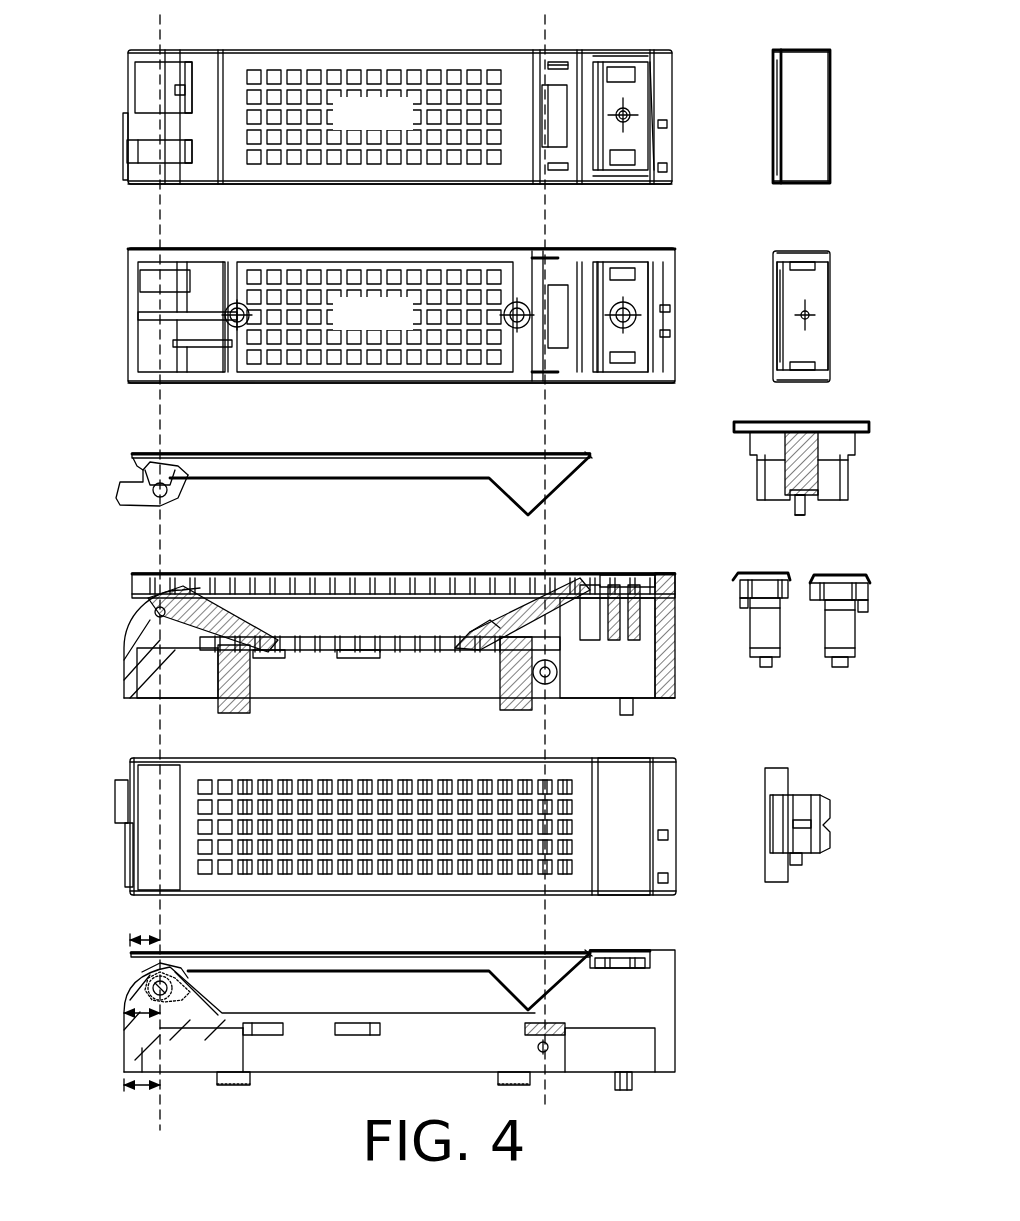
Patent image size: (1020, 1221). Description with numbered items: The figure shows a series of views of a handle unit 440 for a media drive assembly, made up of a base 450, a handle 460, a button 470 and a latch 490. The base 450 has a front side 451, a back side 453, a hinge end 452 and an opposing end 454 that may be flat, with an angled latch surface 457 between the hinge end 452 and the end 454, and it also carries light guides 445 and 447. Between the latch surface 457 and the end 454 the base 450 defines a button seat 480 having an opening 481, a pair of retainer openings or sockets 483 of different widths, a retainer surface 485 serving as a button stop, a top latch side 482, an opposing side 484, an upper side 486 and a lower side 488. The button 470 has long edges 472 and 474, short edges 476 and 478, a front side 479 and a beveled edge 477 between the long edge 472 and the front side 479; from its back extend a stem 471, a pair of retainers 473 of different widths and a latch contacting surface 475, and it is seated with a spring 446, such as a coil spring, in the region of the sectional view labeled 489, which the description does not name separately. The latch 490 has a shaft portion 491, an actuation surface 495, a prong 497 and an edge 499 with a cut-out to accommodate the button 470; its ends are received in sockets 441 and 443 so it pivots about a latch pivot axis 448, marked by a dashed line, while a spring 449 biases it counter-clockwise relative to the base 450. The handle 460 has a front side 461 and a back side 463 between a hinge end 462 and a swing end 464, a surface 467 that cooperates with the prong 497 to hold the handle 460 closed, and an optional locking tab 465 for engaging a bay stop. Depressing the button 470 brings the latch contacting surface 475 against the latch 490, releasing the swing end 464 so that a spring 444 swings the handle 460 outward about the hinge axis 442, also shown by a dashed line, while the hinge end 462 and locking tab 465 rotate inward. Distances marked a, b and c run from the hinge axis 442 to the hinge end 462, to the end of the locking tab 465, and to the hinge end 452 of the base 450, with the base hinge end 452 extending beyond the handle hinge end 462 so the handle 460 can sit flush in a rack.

The handle unit 440 is at (133, 565).
The socket 441 is at (540, 373).
The hinge axis 442 is at (165, 47).
The socket 443 is at (545, 257).
The spring 444 is at (180, 992).
The light guide 445 is at (666, 835).
The spring 446 is at (818, 478).
The light guide 447 is at (666, 878).
The latch pivot axis 448 is at (540, 48).
The spring 449 is at (548, 685).
The base 450 is at (127, 45).
The front side 451 is at (374, 117).
The hinge end 452 is at (128, 130).
The back side 453 is at (375, 317).
The opposing end 454 is at (690, 183).
The latch surface 457 is at (555, 78).
The handle 460 is at (133, 447).
The front side 461 is at (325, 452).
The hinge end 462 is at (132, 460).
The back side 463 is at (320, 479).
The swing end 464 is at (590, 455).
The locking tab 465 is at (118, 497).
The surface 467 is at (540, 630).
The button 470 is at (810, 42).
The stem 471 is at (805, 315).
The long edge 472 is at (773, 115).
The retainers 473 is at (818, 362).
The long edge 474 is at (830, 143).
The latch contacting surface 475 is at (780, 322).
The short edge 476 is at (800, 52).
The beveled edge 477 is at (778, 142).
The short edge 478 is at (790, 184).
The front side 479 is at (805, 115).
The button seat 480 is at (648, 45).
The opening 481 is at (622, 107).
The top latch side 482 is at (580, 127).
The retainer openings 483 is at (612, 150).
The opposing side 484 is at (652, 157).
The retainer surface 485 is at (616, 335).
The upper side 486 is at (612, 48).
The lower side 488 is at (612, 183).
The spring housing 489 is at (660, 565).
The latch 490 is at (812, 740).
The shaft portion 491 is at (786, 770).
The actuation surface 495 is at (815, 796).
The prong 497 is at (766, 855).
The edge 499 is at (826, 830).